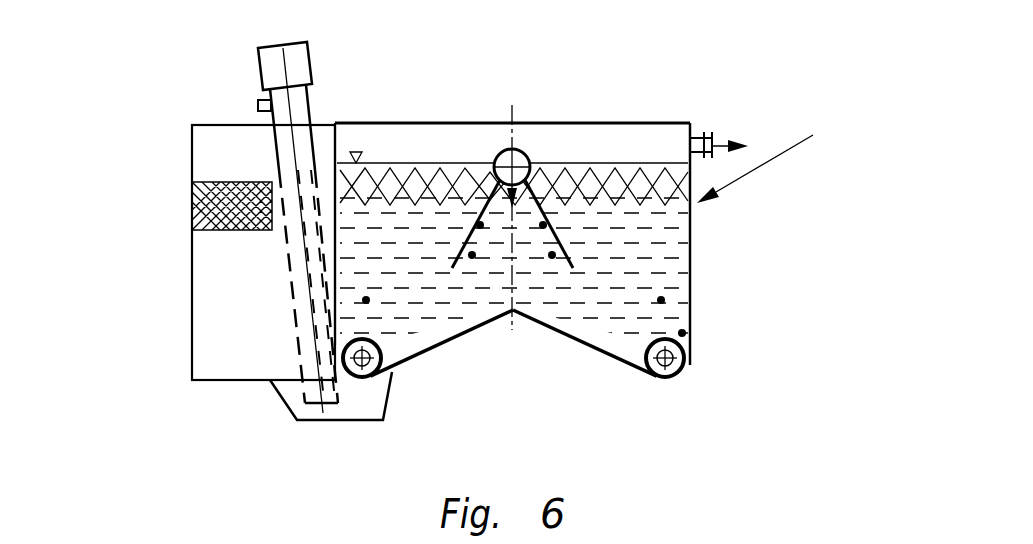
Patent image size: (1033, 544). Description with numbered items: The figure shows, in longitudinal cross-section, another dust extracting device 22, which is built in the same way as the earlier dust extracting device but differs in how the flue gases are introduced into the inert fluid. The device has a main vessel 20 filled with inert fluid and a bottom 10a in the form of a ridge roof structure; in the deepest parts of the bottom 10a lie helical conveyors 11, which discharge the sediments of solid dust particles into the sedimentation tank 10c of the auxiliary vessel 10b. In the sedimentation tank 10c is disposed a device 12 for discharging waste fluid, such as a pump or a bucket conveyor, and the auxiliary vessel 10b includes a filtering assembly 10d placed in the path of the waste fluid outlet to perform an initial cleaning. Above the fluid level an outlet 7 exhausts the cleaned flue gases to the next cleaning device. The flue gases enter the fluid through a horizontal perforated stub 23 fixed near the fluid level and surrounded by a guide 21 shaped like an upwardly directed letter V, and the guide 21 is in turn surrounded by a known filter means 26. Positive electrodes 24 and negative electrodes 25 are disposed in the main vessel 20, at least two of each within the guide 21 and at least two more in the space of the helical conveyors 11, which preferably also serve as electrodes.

The outlet 7 is at (708, 137).
The bottom 10a is at (560, 330).
The auxiliary vessel 10b is at (212, 306).
The sedimentation tank 10c is at (290, 396).
The filtering assembly 10d is at (213, 204).
The helical conveyor 11 is at (346, 366).
The device for discharging waste fluid 12 is at (270, 62).
The main vessel 20 is at (583, 141).
The guide 21 is at (545, 190).
The dust extracting device 22 is at (755, 160).
The horizontal perforated stub 23 is at (508, 158).
The positive electrode 24 is at (543, 225).
The negative electrode 25 is at (480, 225).
The filter means 26 is at (437, 193).